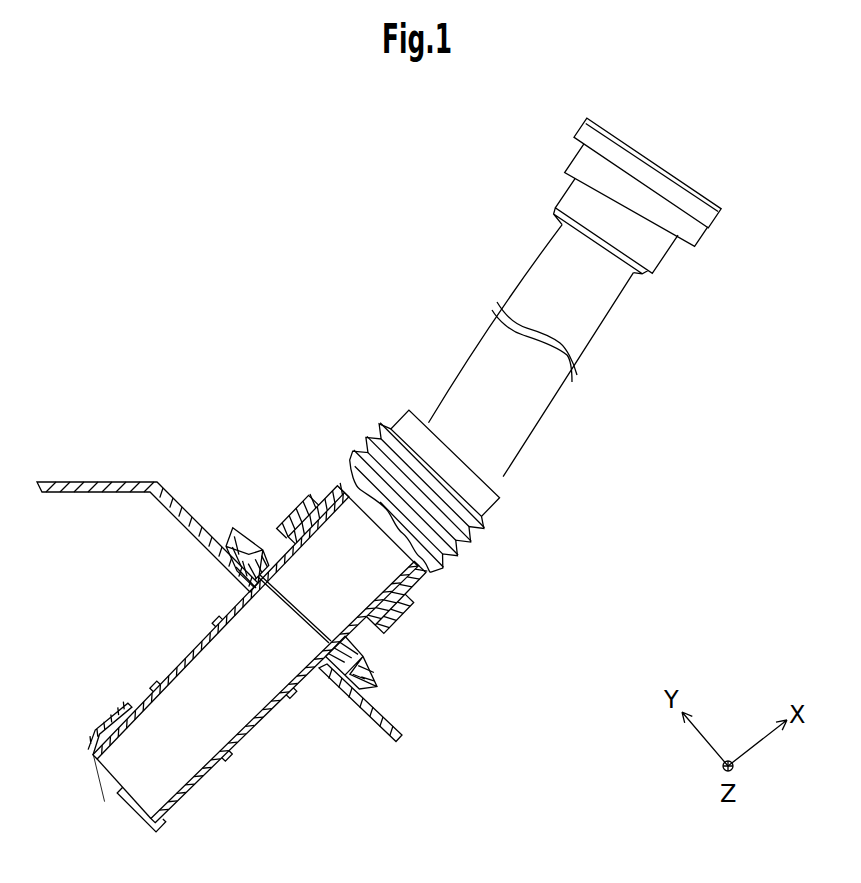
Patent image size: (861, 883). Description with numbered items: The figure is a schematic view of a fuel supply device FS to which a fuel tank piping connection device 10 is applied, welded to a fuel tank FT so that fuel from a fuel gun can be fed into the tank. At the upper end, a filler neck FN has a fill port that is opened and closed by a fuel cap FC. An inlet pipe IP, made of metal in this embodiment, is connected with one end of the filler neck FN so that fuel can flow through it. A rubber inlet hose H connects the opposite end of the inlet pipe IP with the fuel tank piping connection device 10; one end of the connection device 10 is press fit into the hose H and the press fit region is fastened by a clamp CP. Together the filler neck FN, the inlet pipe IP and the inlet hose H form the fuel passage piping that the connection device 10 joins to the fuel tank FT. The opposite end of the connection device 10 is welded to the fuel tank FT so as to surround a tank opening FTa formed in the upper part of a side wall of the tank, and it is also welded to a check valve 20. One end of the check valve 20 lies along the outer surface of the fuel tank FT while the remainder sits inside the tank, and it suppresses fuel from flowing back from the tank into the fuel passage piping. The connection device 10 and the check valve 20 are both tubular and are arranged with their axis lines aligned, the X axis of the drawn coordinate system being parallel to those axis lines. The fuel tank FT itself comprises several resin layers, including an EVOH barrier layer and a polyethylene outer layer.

The fuel supply device FS is at (395, 160).
The fuel cap FC is at (722, 216).
The filler neck FN is at (663, 258).
The inlet pipe IP is at (600, 323).
The inlet hose H is at (490, 507).
The fuel tank piping connection device 10 is at (411, 663).
The check valve 20 is at (247, 813).
The clamp CP is at (293, 505).
The fuel tank FT is at (95, 482).
The tank opening FTa is at (243, 587).